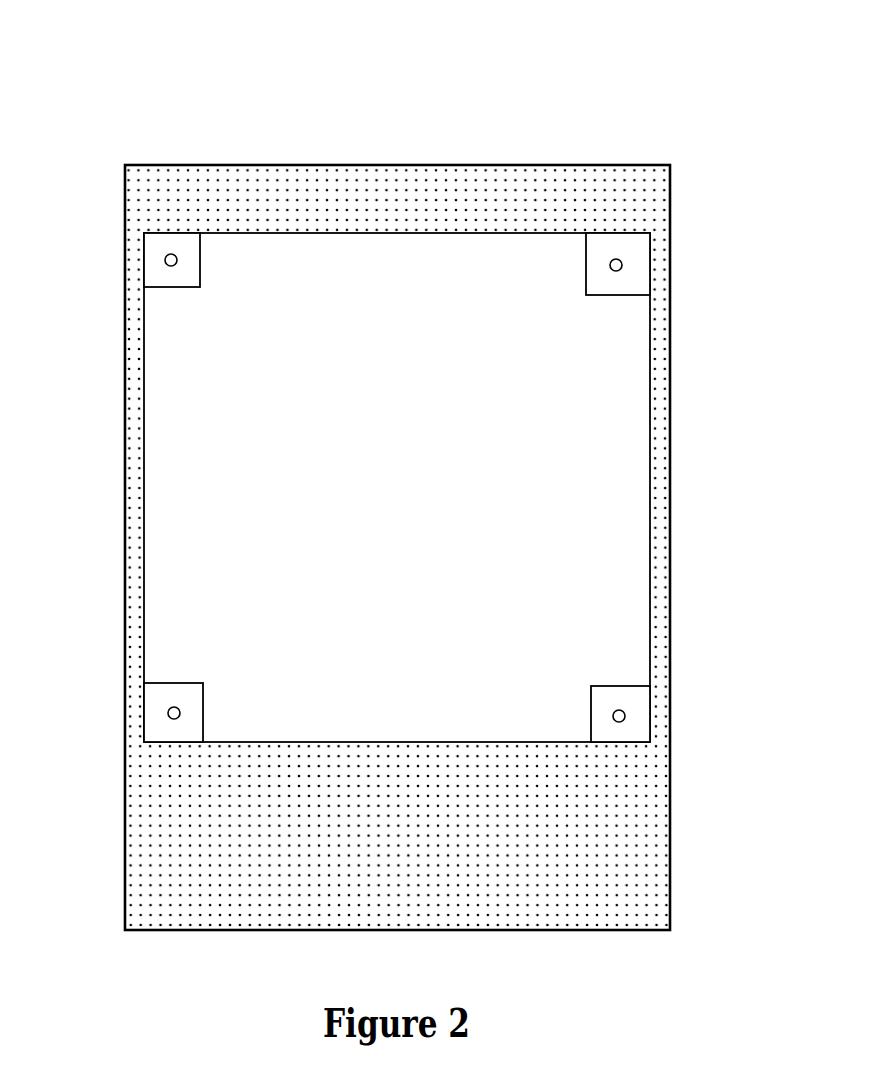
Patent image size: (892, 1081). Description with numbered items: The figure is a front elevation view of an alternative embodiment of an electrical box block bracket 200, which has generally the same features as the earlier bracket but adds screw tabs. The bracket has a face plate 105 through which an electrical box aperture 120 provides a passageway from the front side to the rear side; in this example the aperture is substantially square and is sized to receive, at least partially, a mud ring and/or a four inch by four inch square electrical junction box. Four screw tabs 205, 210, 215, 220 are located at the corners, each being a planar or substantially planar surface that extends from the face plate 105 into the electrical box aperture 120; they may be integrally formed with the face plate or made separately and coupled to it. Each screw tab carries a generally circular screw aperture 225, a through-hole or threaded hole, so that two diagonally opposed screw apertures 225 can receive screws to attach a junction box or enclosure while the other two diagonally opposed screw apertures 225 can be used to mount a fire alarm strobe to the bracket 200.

The electrical box block bracket 200 is at (397, 513).
The face plate 105 is at (538, 873).
The electrical box aperture 120 is at (267, 433).
The screw tab 205 is at (147, 285).
The screw tab 210 is at (153, 696).
The screw tab 215 is at (636, 252).
The screw tab 220 is at (625, 737).
The screw aperture 225 is at (162, 259).